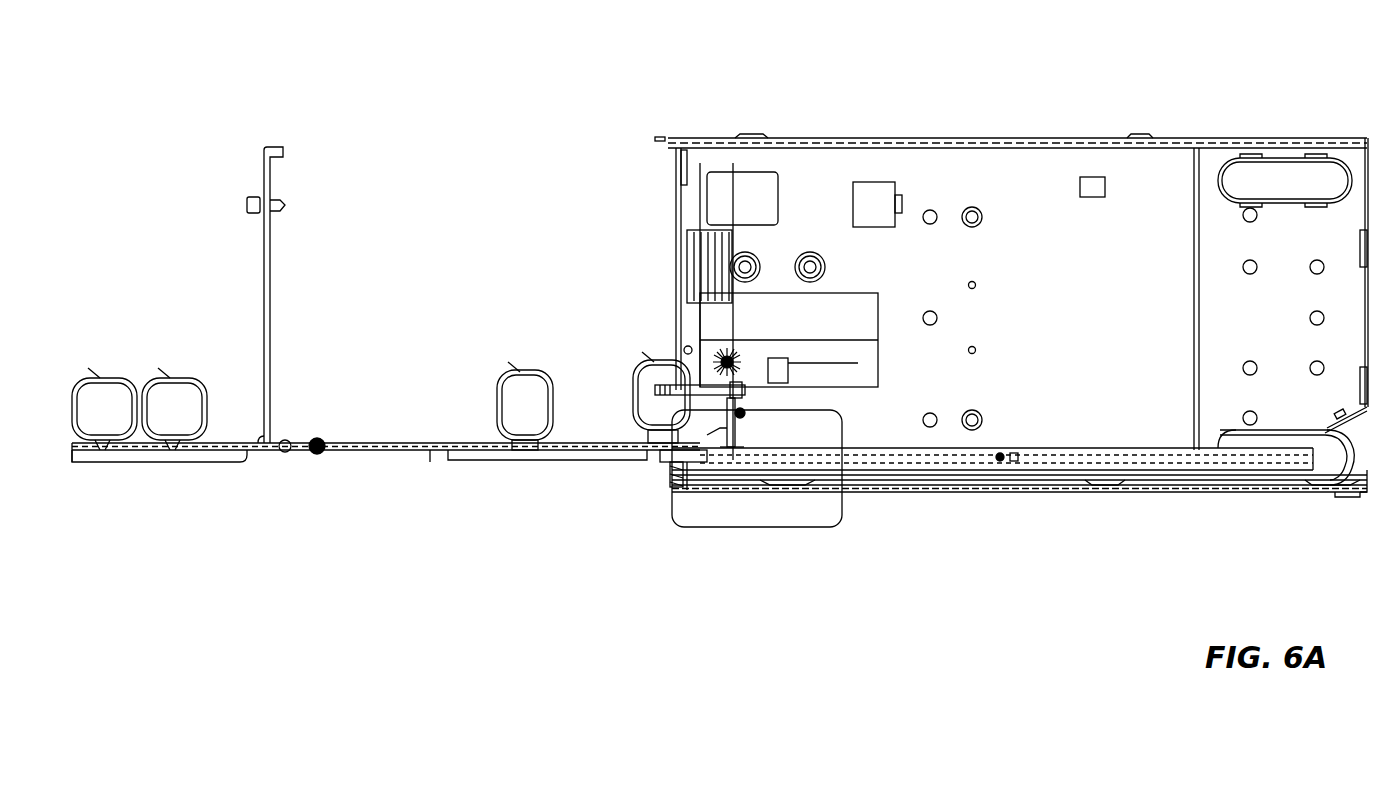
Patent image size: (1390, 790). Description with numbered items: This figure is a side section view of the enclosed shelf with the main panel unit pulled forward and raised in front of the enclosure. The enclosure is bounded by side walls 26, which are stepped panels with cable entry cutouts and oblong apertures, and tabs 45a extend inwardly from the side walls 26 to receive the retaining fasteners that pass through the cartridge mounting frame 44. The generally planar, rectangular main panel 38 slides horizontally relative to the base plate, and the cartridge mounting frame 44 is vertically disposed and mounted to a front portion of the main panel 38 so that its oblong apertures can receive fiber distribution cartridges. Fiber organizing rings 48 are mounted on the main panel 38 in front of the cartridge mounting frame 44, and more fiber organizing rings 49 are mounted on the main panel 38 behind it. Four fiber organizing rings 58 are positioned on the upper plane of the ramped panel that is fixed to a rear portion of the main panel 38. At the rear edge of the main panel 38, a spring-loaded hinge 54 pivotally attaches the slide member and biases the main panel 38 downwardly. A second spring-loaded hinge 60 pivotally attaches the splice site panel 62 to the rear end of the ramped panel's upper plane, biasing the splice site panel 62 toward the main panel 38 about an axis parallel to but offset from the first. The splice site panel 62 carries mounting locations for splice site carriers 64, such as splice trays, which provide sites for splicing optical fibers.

The side wall 26 is at (1033, 193).
The main panel 38 is at (385, 450).
The cartridge mounting frame 44 is at (265, 287).
The tab 45a is at (892, 185).
The fiber organizing rings 48 is at (160, 445).
The fiber organizing rings 49 is at (498, 408).
The hinge 54 is at (665, 457).
The fiber organizing rings 58 is at (632, 392).
The hinge 60 is at (735, 417).
The splice site panel 62 is at (740, 202).
The splice site carrier 64 is at (690, 228).